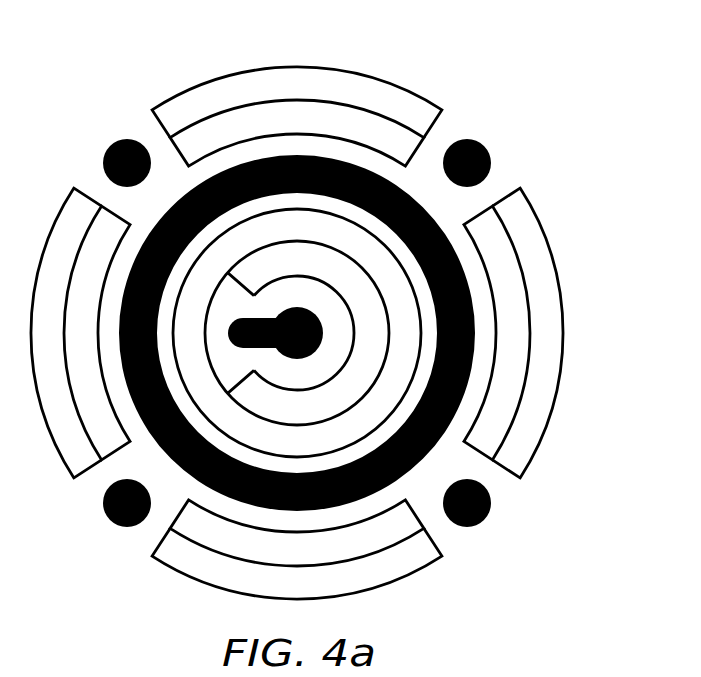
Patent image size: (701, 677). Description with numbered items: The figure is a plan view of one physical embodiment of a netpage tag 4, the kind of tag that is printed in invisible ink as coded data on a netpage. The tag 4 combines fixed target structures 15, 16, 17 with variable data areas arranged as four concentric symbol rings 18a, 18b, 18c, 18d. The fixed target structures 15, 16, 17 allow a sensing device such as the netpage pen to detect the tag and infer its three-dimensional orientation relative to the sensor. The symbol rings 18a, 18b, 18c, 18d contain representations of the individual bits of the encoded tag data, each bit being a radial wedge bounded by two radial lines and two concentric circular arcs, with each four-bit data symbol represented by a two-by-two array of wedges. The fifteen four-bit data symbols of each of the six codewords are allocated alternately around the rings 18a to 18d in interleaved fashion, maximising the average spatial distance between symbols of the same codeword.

The tag 4 is at (158, 83).
The fixed target structure 15 is at (447, 227).
The fixed target structure 16 is at (273, 312).
The fixed target structure 17 is at (485, 142).
The concentric symbol ring 18a is at (297, 333).
The concentric symbol ring 18b is at (297, 333).
The concentric symbol ring 18c is at (297, 333).
The concentric symbol ring 18d is at (297, 333).